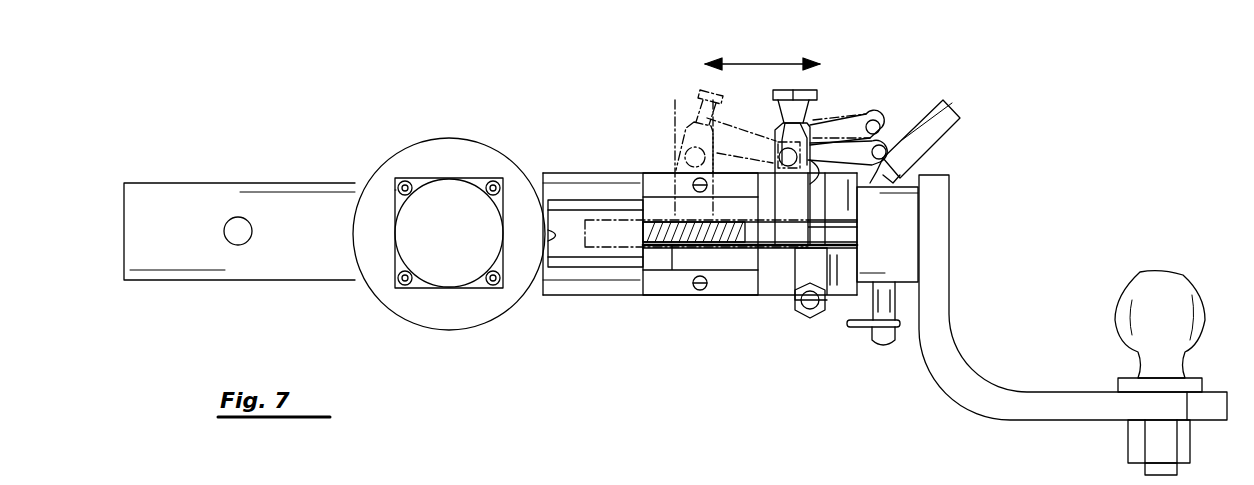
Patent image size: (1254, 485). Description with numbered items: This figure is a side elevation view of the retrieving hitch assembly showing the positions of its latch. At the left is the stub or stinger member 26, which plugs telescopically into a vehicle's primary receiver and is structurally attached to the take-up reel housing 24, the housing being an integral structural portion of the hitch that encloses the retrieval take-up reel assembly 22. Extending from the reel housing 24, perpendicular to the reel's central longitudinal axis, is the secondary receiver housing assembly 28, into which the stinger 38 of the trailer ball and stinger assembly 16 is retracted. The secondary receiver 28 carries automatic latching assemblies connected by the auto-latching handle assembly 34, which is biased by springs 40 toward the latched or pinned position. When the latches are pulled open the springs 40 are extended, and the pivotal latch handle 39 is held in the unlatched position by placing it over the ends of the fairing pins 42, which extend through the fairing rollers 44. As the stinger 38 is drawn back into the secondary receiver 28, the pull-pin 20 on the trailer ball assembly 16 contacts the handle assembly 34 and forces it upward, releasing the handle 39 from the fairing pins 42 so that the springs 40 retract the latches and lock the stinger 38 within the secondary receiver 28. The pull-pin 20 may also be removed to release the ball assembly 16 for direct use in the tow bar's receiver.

The trailer ball and stinger assembly 16 is at (1048, 248).
The pull-pin 20 is at (943, 108).
The retrieval take-up reel assembly 22 is at (403, 126).
The take-up reel housing 24 is at (472, 479).
The stub or stinger member 26 is at (218, 190).
The secondary receiver housing assembly 28 is at (590, 180).
The auto-latching handle assembly 34 is at (831, 85).
The stinger 38 is at (900, 212).
The pivotal latch handle 39 is at (883, 137).
The springs 40 is at (662, 250).
The fairing pins 42 is at (843, 303).
The fairing rollers 44 is at (845, 268).